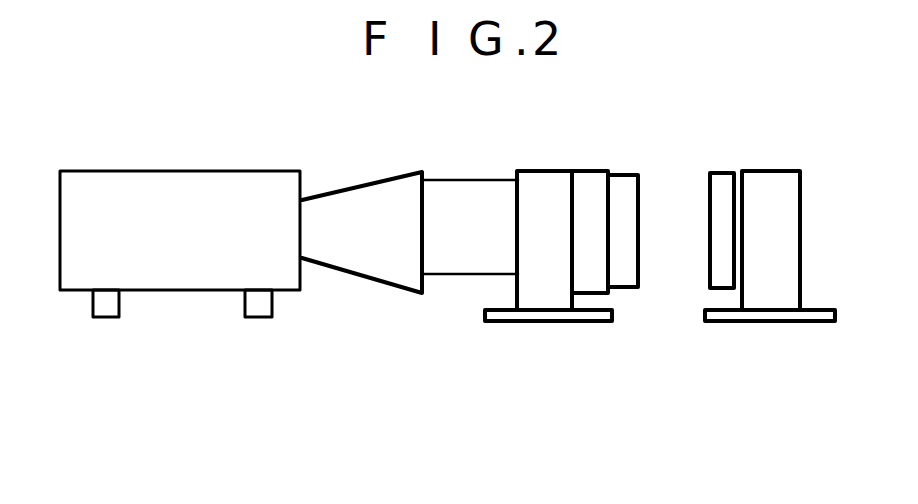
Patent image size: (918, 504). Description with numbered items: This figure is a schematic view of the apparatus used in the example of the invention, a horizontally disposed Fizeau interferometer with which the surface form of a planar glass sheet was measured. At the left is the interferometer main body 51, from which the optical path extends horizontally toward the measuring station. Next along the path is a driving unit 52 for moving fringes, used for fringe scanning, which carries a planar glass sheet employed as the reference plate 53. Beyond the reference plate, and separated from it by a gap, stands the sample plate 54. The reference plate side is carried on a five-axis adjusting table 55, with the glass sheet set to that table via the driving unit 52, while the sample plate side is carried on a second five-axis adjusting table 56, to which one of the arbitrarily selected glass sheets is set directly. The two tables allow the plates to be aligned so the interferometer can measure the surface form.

The interferometer main body 51 is at (228, 192).
The driving unit 52 is at (588, 178).
The reference plate 53 is at (627, 181).
The sample plate 54 is at (725, 183).
The five-axis adjusting table 55 is at (538, 323).
The five-axis adjusting table 56 is at (763, 323).